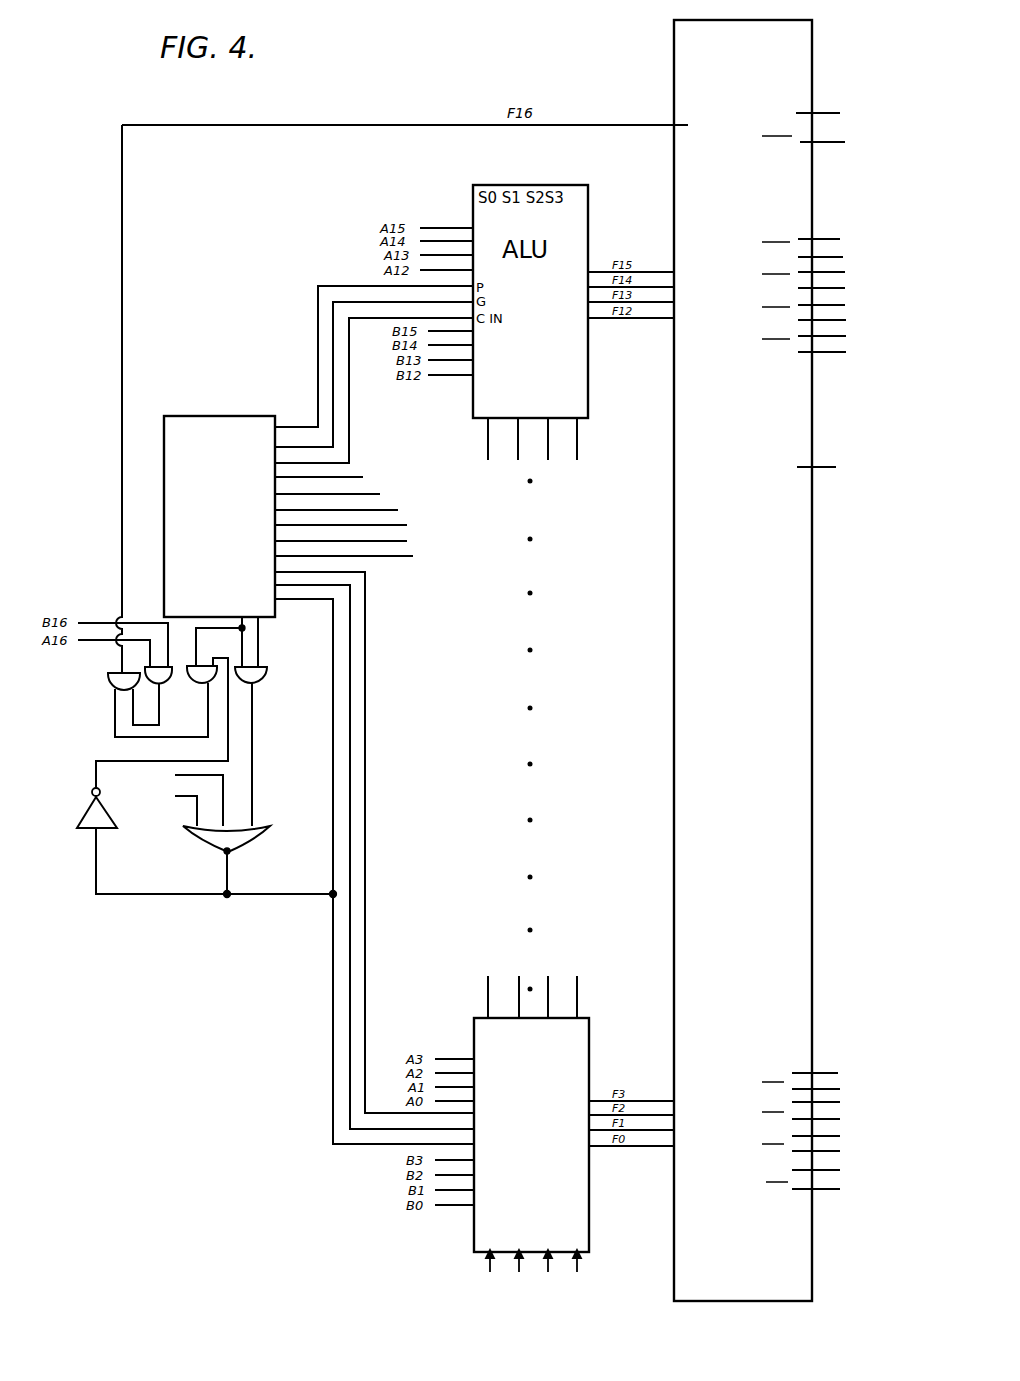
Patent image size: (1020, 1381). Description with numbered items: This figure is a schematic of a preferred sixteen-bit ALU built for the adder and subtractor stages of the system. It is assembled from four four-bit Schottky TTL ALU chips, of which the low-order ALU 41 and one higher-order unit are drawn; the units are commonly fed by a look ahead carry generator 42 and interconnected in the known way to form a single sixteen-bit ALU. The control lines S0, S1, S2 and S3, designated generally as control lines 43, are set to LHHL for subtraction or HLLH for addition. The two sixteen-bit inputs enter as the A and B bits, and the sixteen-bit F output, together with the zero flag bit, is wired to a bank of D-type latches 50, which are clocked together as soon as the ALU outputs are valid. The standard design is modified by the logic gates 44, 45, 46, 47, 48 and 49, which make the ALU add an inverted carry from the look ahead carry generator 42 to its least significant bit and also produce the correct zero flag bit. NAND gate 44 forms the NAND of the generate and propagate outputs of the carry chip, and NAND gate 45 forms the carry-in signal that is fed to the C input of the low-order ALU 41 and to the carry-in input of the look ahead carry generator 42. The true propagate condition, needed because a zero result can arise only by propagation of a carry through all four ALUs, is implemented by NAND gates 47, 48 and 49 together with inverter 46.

The ALU 41 is at (589, 1058).
The look ahead carry generator 42 is at (200, 416).
The control lines 43 is at (466, 404).
The NAND gate 44 is at (262, 680).
The NAND gate 45 is at (255, 845).
The inverter 46 is at (70, 812).
The NAND gate 47 is at (205, 685).
The NAND gate 48 is at (172, 676).
The NAND gate 49 is at (108, 676).
The latches 50 is at (674, 78).